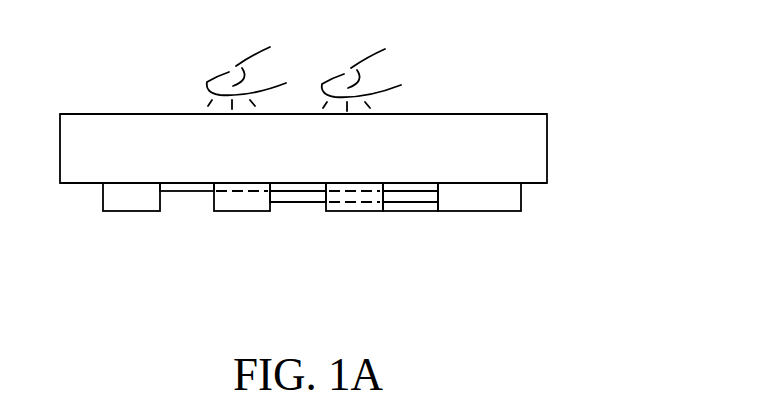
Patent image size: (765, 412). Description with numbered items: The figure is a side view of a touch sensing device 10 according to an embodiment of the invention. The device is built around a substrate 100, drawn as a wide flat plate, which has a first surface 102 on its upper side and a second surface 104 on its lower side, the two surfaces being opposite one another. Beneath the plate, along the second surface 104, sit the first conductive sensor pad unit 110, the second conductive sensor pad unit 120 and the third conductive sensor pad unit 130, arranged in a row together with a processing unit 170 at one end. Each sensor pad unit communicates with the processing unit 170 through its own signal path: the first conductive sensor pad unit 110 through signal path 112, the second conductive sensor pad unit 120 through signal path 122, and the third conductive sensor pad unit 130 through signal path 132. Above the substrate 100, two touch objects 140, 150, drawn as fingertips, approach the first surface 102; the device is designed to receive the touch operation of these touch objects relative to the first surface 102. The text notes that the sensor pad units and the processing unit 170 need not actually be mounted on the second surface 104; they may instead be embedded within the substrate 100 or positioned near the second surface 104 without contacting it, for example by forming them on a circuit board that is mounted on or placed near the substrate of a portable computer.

The touch sensing device 10 is at (607, 260).
The substrate 100 is at (533, 160).
The first surface 102 is at (531, 114).
The second surface 104 is at (62, 184).
The first conductive sensor pad unit 110 is at (130, 203).
The signal path 112 is at (190, 193).
The second conductive sensor pad unit 120 is at (243, 205).
The signal path 122 is at (307, 203).
The third conductive sensor pad unit 130 is at (357, 205).
The signal path 132 is at (417, 212).
The touch object 140 is at (231, 67).
The touch object 150 is at (394, 87).
The processing unit 170 is at (490, 207).